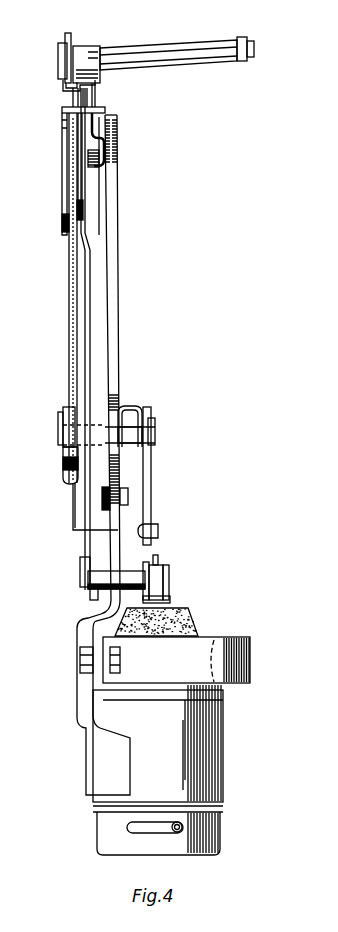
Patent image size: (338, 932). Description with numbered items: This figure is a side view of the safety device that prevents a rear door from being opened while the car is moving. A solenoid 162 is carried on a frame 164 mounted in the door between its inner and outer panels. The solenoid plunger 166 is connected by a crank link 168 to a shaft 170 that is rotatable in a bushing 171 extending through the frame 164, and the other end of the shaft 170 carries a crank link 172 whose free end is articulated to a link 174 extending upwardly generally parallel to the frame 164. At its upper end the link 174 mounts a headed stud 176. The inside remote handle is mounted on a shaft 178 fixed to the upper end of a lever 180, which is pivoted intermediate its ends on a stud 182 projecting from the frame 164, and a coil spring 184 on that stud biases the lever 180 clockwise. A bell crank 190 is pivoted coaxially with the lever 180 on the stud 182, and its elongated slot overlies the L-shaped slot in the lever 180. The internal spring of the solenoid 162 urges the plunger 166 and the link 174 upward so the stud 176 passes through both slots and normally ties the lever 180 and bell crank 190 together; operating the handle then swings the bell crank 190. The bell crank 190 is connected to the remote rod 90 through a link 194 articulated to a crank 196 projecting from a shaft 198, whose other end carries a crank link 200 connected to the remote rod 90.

The shaft 178 is at (224, 47).
The lever 180 is at (68, 96).
The stud 182 is at (62, 140).
The coil spring 184 is at (97, 167).
The bell crank 190 is at (75, 185).
The headed stud 176 is at (68, 207).
The link 174 is at (88, 317).
The link 194 is at (73, 307).
The frame 164 is at (113, 364).
The shaft 198 is at (100, 437).
The crank 196 is at (72, 437).
The crank link 200 is at (152, 460).
The remote rod 90 is at (160, 531).
The bushing 171 is at (133, 575).
The crank link 168 is at (157, 561).
The shaft 170 is at (175, 577).
The solenoid plunger 166 is at (165, 597).
The crank link 172 is at (90, 597).
The solenoid 162 is at (207, 733).